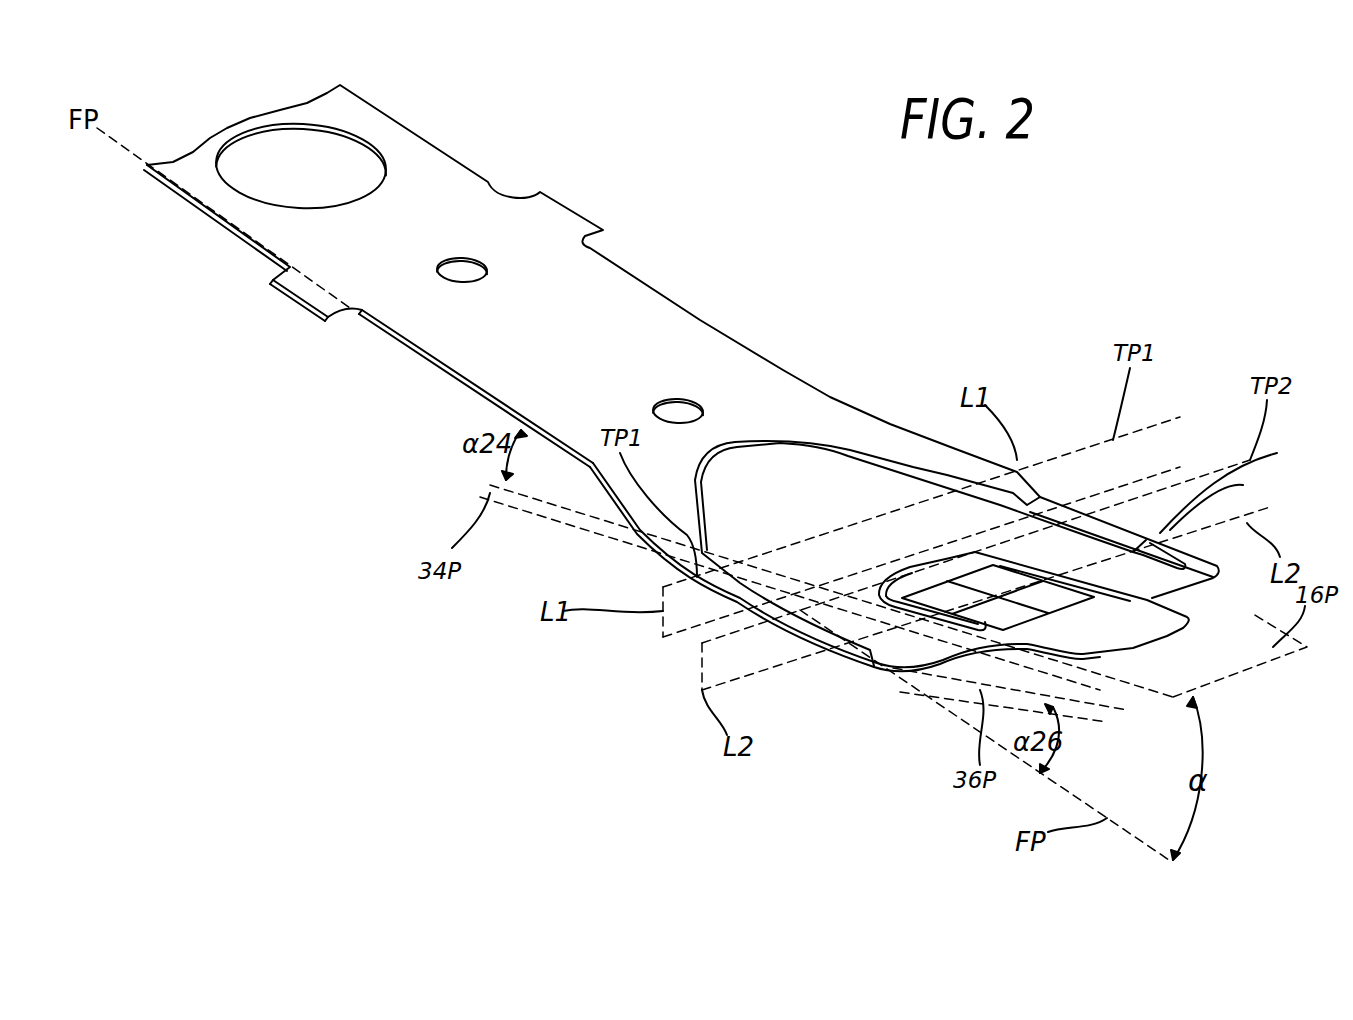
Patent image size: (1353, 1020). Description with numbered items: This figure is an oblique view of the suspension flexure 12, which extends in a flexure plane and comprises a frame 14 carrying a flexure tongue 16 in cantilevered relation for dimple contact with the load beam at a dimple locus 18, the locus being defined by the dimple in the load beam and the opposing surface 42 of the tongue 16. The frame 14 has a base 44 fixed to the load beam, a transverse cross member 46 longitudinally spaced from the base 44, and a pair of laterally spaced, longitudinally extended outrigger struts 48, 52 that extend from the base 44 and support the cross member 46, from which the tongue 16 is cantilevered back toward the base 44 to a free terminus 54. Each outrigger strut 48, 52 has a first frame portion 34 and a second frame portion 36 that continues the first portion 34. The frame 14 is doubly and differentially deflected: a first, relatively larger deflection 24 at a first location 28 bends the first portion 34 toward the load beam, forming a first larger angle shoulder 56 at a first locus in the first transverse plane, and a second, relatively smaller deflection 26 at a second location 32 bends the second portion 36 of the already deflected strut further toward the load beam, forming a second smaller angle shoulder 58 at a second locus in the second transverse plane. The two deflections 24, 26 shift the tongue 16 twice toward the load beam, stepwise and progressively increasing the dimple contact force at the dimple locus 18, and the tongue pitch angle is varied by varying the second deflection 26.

The flexure 12 is at (822, 350).
The frame 14 is at (782, 637).
The flexure tongue 16 is at (950, 560).
The dimple locus 18 is at (1003, 594).
The first deflection 24 is at (1050, 492).
The second deflection 26 is at (790, 798).
The first location 28 is at (1040, 490).
The second location 32 is at (1212, 506).
The first frame portion 34 is at (700, 593).
The second frame portion 36 is at (1143, 555).
The opposing surface 42 is at (990, 577).
The base 44 is at (795, 392).
The transverse cross member 46 is at (1190, 592).
The outrigger strut 48 is at (773, 620).
The outrigger strut 52 is at (1047, 493).
The free terminus 54 is at (903, 583).
The first relatively larger angle shoulder 56 is at (1053, 494).
The second relatively smaller angle shoulder 58 is at (862, 645).